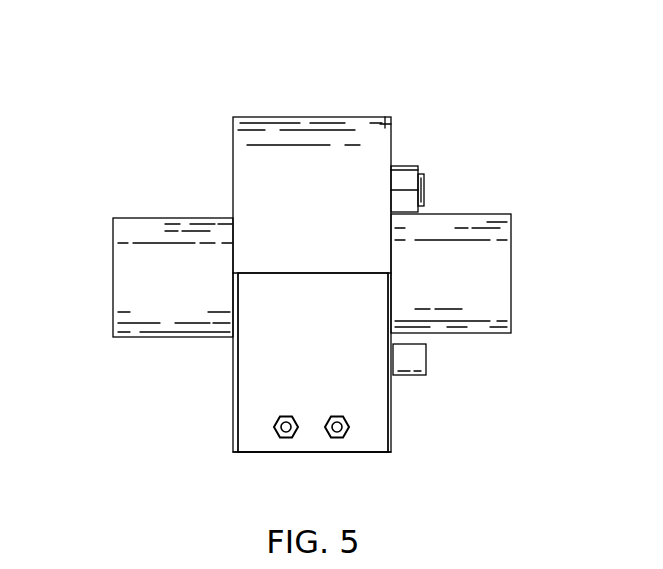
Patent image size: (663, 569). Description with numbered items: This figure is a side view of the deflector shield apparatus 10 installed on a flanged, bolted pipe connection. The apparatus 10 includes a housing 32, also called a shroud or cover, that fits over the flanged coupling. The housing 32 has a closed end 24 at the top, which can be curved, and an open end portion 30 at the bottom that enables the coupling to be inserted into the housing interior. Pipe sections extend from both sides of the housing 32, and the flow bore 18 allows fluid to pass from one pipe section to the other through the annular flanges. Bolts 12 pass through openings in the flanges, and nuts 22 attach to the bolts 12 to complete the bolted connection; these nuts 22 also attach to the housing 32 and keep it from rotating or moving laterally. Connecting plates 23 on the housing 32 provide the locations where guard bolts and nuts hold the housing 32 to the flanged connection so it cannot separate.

The deflector shield apparatus 10 is at (155, 107).
The bolt 12 is at (424, 183).
The flow bore 18 is at (113, 274).
The nut 22 is at (403, 178).
The connecting plate 23 is at (267, 363).
The closed end 24 is at (365, 130).
The open end portion 30 is at (267, 452).
The housing 32 is at (292, 115).